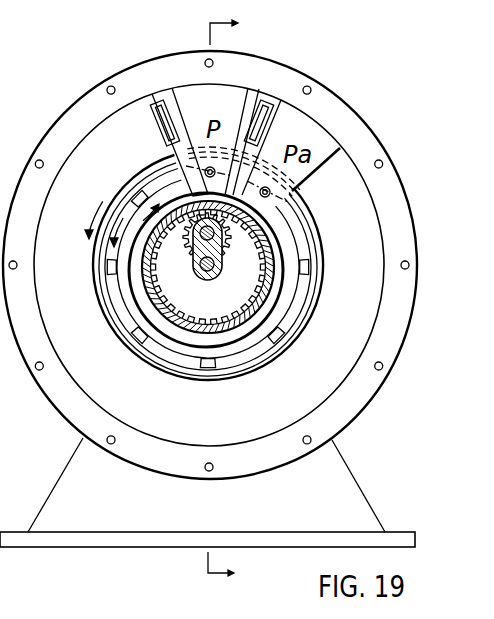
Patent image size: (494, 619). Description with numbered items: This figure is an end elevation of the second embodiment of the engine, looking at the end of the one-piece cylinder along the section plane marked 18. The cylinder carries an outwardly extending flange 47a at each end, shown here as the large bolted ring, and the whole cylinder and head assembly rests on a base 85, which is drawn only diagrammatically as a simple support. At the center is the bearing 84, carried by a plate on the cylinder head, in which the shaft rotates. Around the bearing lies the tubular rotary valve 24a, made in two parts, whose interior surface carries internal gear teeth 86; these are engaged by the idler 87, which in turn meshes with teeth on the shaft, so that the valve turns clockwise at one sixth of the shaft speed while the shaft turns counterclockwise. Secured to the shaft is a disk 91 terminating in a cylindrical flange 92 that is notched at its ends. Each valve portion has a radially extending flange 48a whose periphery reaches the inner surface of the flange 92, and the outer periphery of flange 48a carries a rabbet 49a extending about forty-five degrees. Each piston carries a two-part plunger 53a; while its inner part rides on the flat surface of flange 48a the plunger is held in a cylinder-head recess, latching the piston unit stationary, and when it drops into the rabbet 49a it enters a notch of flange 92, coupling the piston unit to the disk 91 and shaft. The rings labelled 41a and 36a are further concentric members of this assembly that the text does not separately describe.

The section line 18- 18 is at (237, 299).
The flange 47a is at (283, 65).
The plunger 53a is at (205, 170).
The rotary valve 24a is at (272, 250).
The radially extending flange 48a is at (282, 287).
The rabbet 49a is at (296, 270).
The cylindrical flange 92 is at (250, 358).
The outer ring 41a is at (285, 342).
The outer housing ring 36a is at (275, 371).
The internal gear teeth 86 is at (153, 286).
The disk 91 is at (222, 299).
The idler 87 is at (184, 241).
The bearing 84 is at (221, 259).
The base 85 is at (207, 492).